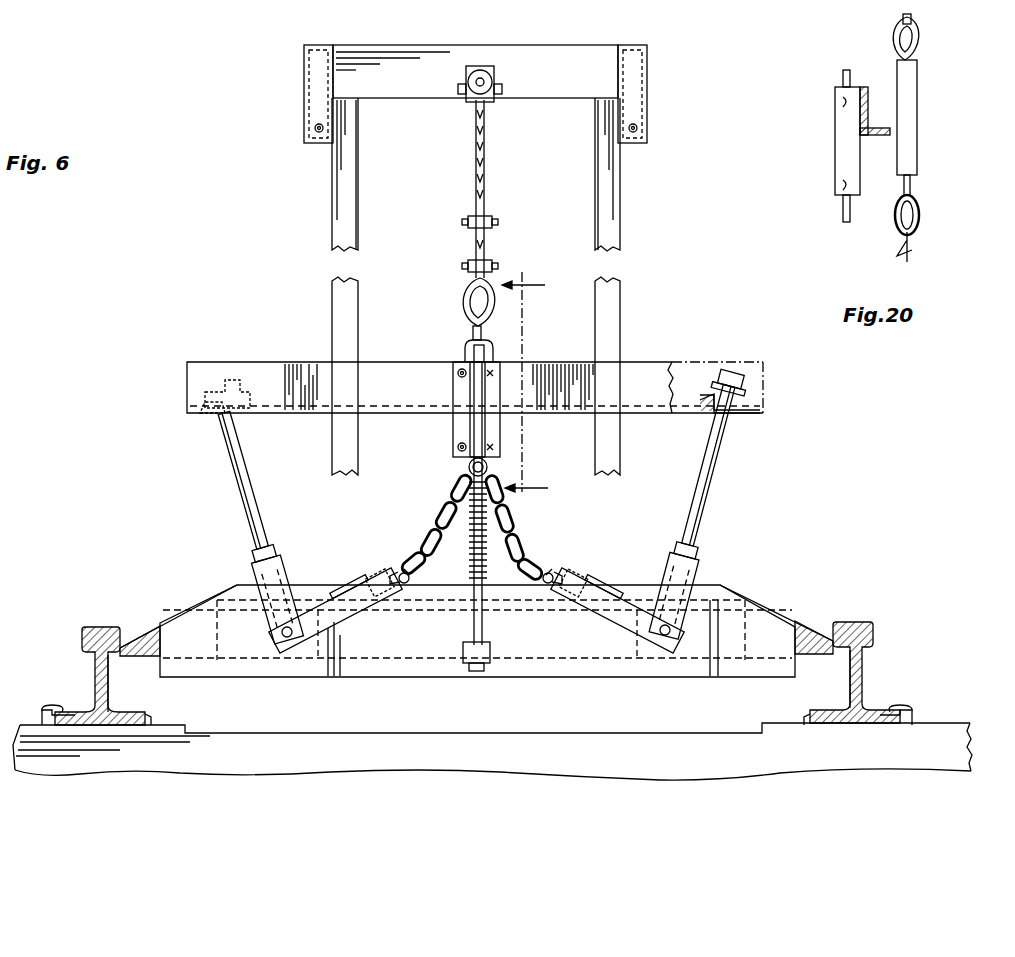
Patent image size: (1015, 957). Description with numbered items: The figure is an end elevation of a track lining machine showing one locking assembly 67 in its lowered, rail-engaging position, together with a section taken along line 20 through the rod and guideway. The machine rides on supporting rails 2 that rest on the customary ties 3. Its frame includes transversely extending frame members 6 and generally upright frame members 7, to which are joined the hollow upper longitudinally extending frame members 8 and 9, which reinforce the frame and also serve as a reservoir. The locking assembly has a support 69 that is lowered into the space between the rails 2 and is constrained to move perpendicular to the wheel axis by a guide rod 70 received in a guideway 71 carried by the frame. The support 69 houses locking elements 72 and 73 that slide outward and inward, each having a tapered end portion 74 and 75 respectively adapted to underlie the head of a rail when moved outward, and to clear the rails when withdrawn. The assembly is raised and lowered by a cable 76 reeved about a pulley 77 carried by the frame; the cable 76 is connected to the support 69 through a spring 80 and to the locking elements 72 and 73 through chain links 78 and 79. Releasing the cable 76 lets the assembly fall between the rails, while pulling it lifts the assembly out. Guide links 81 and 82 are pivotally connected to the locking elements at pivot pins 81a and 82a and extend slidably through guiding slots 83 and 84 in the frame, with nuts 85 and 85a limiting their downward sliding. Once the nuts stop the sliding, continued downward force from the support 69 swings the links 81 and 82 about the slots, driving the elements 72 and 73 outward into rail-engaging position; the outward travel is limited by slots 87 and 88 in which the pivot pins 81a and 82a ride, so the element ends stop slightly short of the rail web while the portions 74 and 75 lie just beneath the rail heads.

In FIG. 6, the supporting rails 2 is at (95, 655).
In FIG. 6, the ties 3 is at (540, 748).
In FIG. 6, the transversely extending frame members 6 is at (535, 370).
In FIG. 20, the transversely extending frame members 6 is at (866, 104).
In FIG. 6, the upright frame members 7 is at (335, 292).
In FIG. 6, the upper longitudinally extending frame member 8 is at (648, 112).
In FIG. 6, the upper longitudinally extending frame member 9 is at (305, 124).
In FIG. 6, the section line 20 is at (540, 386).
In FIG. 6, the locking assembly 67 is at (755, 585).
In FIG. 6, the support 69 is at (430, 652).
In FIG. 6, the guide rod 70 is at (466, 520).
In FIG. 20, the guide rod 70 is at (842, 208).
In FIG. 6, the guideway 71 is at (498, 418).
In FIG. 20, the guideway 71 is at (838, 146).
In FIG. 6, the locking element 72 is at (820, 630).
In FIG. 6, the locking element 73 is at (143, 625).
In FIG. 6, the tapered end portion 74 is at (843, 656).
In FIG. 6, the tapered end portion 75 is at (112, 656).
In FIG. 6, the cable 76 is at (485, 175).
In FIG. 20, the cable 76 is at (915, 22).
In FIG. 6, the pulley 77 is at (490, 102).
In FIG. 6, the chain link 78 is at (515, 530).
In FIG. 20, the chain link 78 is at (920, 210).
In FIG. 6, the chain link 79 is at (420, 556).
In FIG. 6, the spring 80 is at (470, 548).
In FIG. 20, the spring 80 is at (912, 248).
In FIG. 6, the guide link 81 is at (712, 497).
In FIG. 6, the pivot pin 81a is at (670, 636).
In FIG. 6, the guide link 82 is at (240, 484).
In FIG. 6, the pivot pin 82a is at (281, 634).
In FIG. 6, the guiding slot 83 is at (735, 414).
In FIG. 6, the guiding slot 84 is at (214, 414).
In FIG. 6, the nut 85 is at (732, 378).
In FIG. 6, the nut 85a is at (218, 388).
In FIG. 6, the slot 87 is at (655, 652).
In FIG. 6, the slot 88 is at (296, 652).